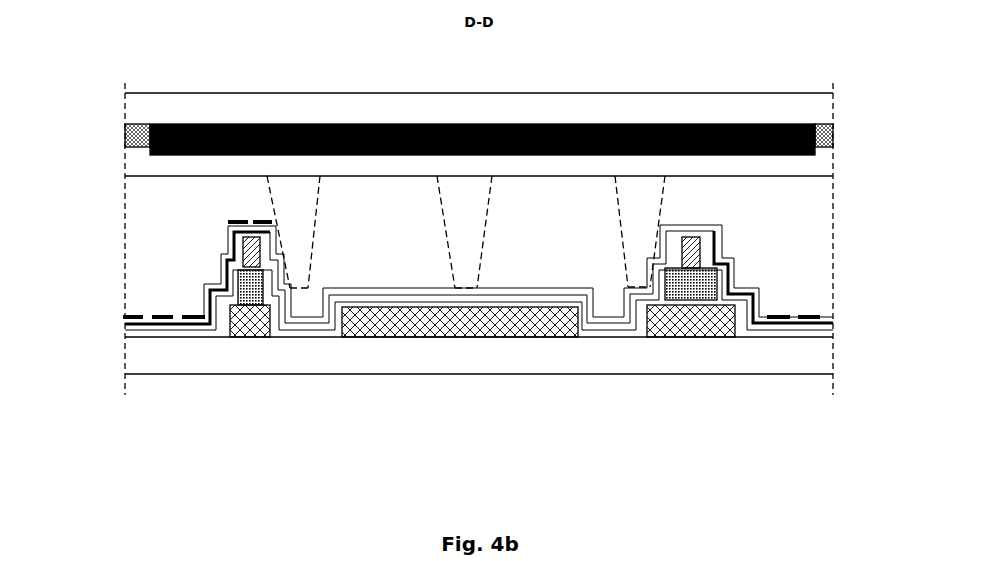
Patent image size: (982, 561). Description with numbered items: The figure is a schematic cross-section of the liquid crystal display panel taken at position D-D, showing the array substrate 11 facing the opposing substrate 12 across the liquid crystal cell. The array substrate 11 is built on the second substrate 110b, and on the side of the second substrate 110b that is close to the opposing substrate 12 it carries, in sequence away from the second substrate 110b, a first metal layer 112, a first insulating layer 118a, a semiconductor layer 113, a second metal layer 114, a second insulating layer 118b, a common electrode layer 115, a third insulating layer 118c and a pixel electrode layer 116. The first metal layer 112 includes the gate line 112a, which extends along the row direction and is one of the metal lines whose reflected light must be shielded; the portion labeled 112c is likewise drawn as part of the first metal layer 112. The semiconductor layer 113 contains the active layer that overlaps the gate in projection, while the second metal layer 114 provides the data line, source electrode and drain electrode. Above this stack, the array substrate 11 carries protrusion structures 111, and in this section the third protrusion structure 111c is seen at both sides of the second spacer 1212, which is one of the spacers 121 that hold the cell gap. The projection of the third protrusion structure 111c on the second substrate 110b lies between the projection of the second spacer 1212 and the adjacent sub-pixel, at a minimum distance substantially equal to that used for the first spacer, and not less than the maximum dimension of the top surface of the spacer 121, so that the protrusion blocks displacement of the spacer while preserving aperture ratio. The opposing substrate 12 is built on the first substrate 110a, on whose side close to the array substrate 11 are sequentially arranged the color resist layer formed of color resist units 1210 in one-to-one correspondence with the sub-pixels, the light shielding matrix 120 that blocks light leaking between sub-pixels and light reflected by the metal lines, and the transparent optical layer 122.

The opposing substrate 12 is at (757, 80).
The first substrate 110a is at (387, 105).
The second substrate 110b is at (310, 355).
The array substrate 11 is at (768, 385).
The light shielding matrix 120 is at (148, 153).
The color resist unit 1210 is at (837, 132).
The transparent optical layer 122 is at (830, 160).
The second spacer 1212 is at (443, 218).
The spacer 121 is at (466, 232).
The third protrusion structure 111c is at (247, 212).
The protrusion structure 111 is at (471, 253).
The second metal layer 114 is at (692, 248).
The pixel electrode layer 116 is at (812, 317).
The common electrode layer 115 is at (833, 322).
The semiconductor layer 113 is at (250, 338).
The first insulating layer 118a is at (600, 330).
The second insulating layer 118b is at (630, 330).
The third insulating layer 118c is at (292, 338).
The gate line 112a is at (445, 330).
The second metal layer portion 112c is at (703, 338).
The first metal layer 112 is at (546, 366).